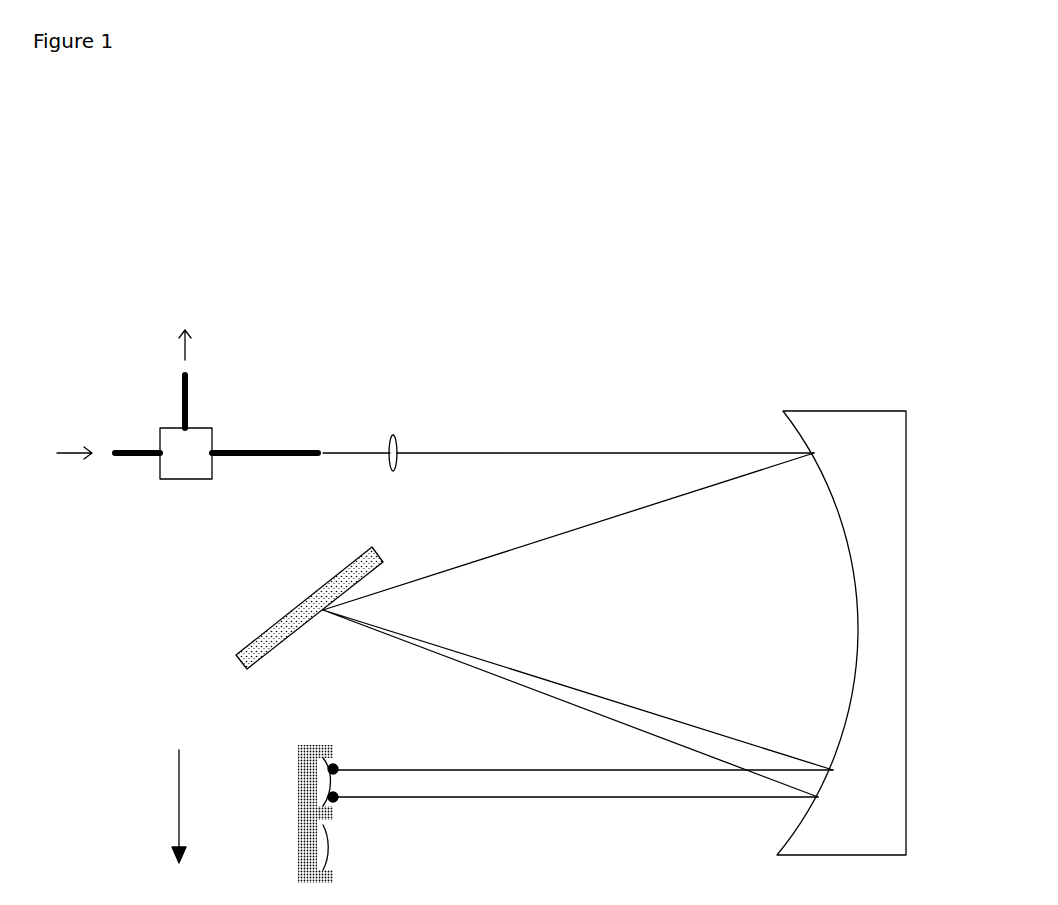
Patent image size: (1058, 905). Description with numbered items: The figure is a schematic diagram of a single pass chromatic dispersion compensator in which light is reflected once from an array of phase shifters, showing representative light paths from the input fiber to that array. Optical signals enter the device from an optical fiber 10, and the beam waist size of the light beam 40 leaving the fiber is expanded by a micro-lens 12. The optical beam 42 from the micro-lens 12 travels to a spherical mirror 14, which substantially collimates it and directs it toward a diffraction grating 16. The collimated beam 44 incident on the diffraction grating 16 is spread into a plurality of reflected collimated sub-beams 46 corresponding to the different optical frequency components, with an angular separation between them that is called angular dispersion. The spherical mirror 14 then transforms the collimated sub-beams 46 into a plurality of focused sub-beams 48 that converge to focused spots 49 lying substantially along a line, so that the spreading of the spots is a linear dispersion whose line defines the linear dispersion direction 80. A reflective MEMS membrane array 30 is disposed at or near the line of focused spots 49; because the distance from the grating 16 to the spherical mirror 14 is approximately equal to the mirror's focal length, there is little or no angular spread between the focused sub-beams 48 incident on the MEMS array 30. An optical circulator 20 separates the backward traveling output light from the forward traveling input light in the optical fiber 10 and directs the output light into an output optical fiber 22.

The optical fiber 10 is at (128, 456).
The micro-lens 12 is at (388, 437).
The spherical mirror 14 is at (842, 434).
The diffraction grating 16 is at (273, 630).
The optical circulator 20 is at (185, 467).
The output optical fiber 22 is at (187, 396).
The reflective MEMS membrane array 30 is at (300, 792).
The light beam 40 is at (343, 452).
The optical beam 42 is at (585, 452).
The collimated beam 44 is at (668, 505).
The reflected collimated sub-beams 46 is at (685, 722).
The focused sub-beams 48 is at (498, 770).
The focused spots 49 is at (335, 778).
The linear dispersion direction 80 is at (175, 798).